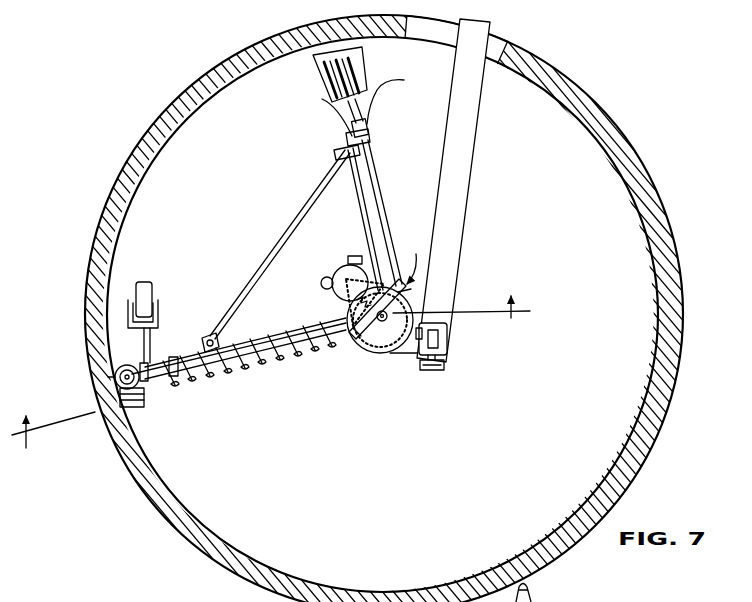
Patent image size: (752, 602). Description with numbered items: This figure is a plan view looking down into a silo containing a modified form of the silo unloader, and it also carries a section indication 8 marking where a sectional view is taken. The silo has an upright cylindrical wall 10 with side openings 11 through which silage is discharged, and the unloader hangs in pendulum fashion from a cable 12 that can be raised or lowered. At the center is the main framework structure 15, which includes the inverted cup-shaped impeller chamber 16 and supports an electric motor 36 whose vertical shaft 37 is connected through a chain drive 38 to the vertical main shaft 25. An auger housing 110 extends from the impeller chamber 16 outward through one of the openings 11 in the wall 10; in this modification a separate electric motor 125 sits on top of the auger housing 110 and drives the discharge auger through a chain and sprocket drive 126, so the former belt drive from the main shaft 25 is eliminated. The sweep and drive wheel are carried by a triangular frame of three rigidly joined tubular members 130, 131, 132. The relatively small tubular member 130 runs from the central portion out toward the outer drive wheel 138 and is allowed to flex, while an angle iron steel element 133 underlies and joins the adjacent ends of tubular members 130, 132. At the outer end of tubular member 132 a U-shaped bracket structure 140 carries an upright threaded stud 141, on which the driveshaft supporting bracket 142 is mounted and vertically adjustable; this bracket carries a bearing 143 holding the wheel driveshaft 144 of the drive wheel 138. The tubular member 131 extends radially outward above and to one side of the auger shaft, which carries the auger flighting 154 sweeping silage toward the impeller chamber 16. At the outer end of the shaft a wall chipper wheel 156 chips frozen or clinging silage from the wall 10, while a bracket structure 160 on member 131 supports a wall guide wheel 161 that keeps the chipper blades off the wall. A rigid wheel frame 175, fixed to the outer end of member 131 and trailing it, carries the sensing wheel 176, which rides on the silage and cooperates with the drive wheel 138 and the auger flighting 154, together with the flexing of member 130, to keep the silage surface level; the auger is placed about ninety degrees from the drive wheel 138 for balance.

The section line 8- 8 is at (271, 383).
The cylindrical wall 10 is at (148, 172).
The side openings 11 is at (500, 54).
The cable 12 is at (533, 588).
The main framework structure 15 is at (353, 341).
The impeller chamber 16 is at (412, 260).
The vertical shaft 25 is at (411, 290).
The electric motor 36 is at (337, 288).
The vertical shaft 37 is at (352, 262).
The chain drive 38 is at (385, 355).
The auger housing 110 is at (451, 247).
The electric motor 125 is at (447, 340).
The chain and sprocket drive 126 is at (432, 370).
The tubular member 130 is at (365, 213).
The tubular member 131 is at (300, 322).
The tubular member 132 is at (270, 248).
The angle iron steel element 133 is at (350, 162).
The outer drive wheel 138 is at (356, 73).
The U-shaped bracket structure 140 is at (350, 140).
The threaded stud 141 is at (325, 112).
The driveshaft supporting bracket 142 is at (367, 117).
The bearing 143 is at (400, 96).
The wheel driveshaft 144 is at (387, 209).
The auger flighting 154 is at (258, 367).
The wall chipper wheel 156 is at (130, 407).
The bracket structure 160 is at (143, 364).
The wall guide wheel 161 is at (108, 377).
The wheel frame 175 is at (153, 346).
The sensing wheel 176 is at (145, 286).